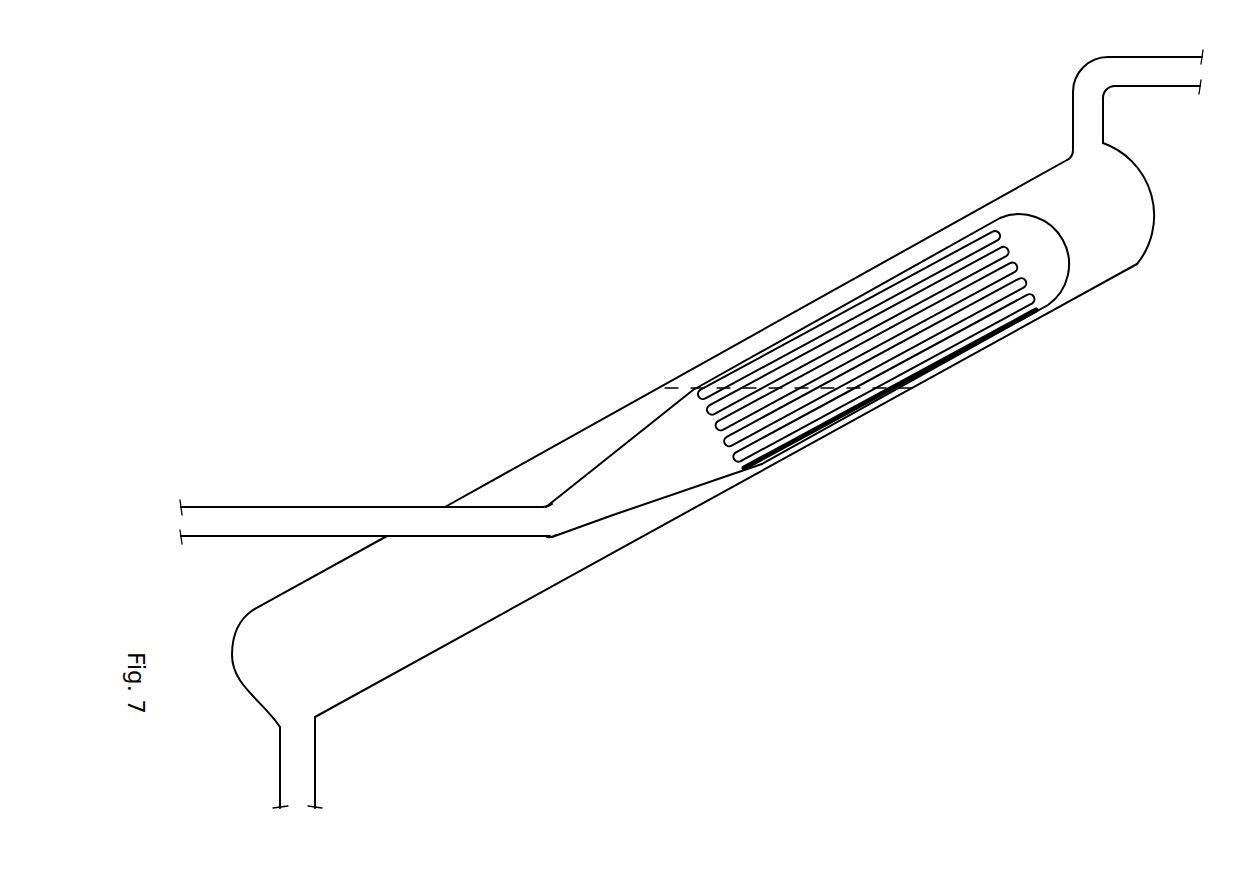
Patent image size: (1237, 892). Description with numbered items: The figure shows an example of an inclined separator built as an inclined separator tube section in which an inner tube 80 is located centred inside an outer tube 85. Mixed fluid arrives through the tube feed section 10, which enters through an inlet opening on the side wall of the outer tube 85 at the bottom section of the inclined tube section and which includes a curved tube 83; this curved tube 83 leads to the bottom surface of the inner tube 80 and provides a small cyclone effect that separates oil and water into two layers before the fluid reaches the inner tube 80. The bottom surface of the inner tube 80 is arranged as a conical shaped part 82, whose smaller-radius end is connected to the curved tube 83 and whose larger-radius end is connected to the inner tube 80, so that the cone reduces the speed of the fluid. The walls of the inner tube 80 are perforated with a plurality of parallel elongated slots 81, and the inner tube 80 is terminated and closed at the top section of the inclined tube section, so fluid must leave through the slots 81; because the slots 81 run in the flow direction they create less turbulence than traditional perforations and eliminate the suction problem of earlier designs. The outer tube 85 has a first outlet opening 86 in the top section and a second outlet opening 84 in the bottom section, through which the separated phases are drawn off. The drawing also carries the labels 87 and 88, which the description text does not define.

The tube feed section 10 is at (303, 503).
The inner tube 80 is at (1022, 226).
The elongated slots 81 is at (925, 333).
The conical shaped bottom surface 82 is at (613, 515).
The curved tube 83 is at (550, 540).
The second outlet opening 84 is at (316, 763).
The outer tube 85 is at (1107, 283).
The first outlet opening 86 is at (1158, 88).
The center line 87 is at (678, 385).
The housing tube 88 is at (755, 335).